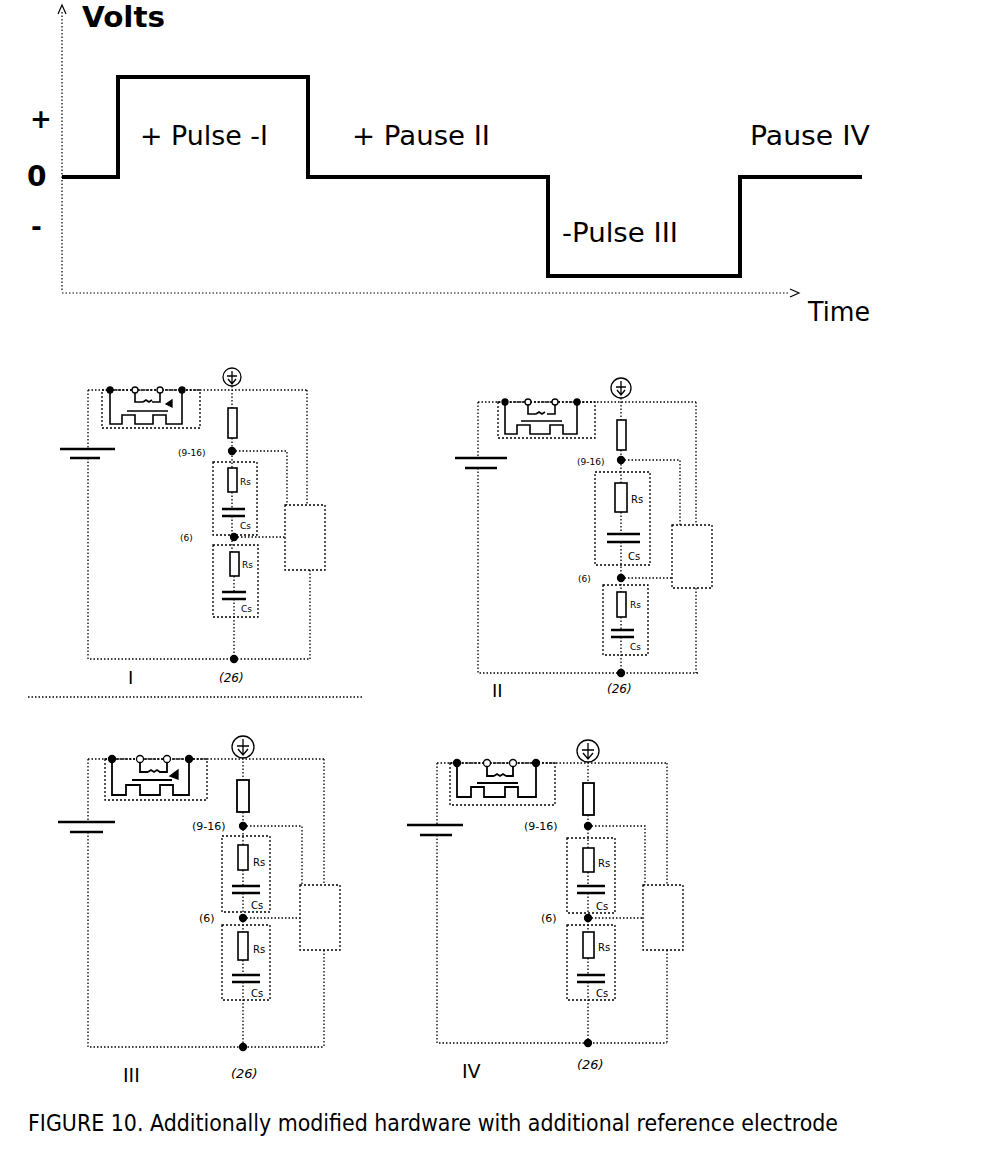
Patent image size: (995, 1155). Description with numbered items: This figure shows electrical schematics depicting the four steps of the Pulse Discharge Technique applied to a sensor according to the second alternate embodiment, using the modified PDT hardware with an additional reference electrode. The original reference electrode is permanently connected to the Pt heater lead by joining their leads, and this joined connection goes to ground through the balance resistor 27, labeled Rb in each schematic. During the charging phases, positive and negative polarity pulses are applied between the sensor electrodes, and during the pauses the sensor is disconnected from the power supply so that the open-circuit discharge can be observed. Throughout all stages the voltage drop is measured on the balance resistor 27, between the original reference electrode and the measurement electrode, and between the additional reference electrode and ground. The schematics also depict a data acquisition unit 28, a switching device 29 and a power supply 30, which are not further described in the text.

The balance resistor 27 is at (431, 606).
The data acquisition unit (DAQ) 28 is at (515, 727).
The switching device / relay 29 is at (348, 582).
The power supply / battery 30 is at (267, 645).